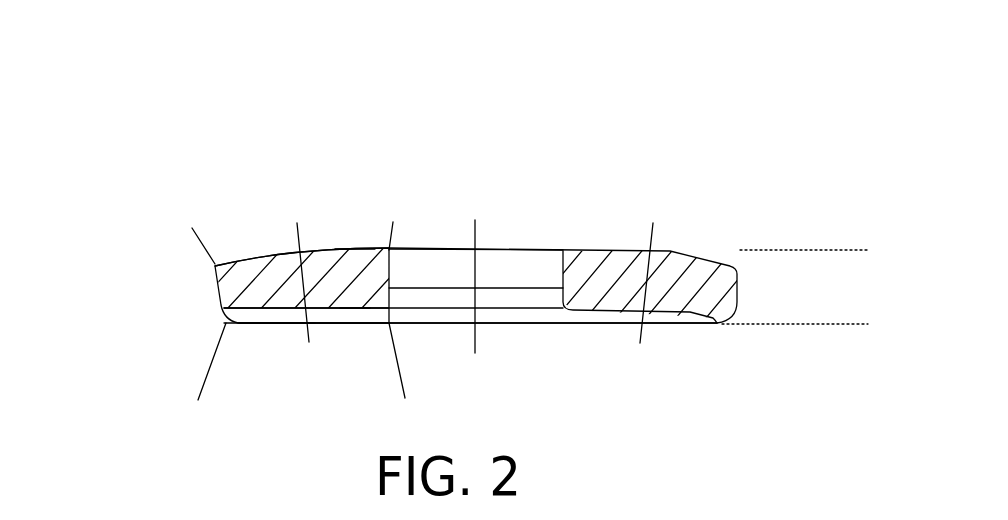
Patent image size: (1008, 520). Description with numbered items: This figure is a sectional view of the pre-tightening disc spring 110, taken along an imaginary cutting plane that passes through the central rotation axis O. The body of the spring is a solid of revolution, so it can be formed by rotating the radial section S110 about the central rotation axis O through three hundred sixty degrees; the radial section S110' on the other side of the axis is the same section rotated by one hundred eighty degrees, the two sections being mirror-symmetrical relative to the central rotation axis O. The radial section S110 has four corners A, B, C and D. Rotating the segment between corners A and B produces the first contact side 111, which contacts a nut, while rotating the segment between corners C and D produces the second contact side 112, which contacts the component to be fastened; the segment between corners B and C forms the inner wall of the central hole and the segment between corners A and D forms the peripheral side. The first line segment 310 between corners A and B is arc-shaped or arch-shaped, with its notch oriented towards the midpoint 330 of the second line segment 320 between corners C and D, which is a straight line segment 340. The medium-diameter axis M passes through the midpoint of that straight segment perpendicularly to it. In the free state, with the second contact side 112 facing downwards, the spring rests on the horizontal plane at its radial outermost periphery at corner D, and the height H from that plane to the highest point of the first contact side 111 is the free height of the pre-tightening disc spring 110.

The pre-tightening disc spring 110 is at (553, 95).
The first contact side 111 is at (517, 248).
The second contact side 112 is at (527, 310).
The radial section S110 is at (323, 243).
The radial section S110' is at (643, 253).
The first line segment 310 is at (354, 250).
The second line segment 320 is at (352, 316).
The midpoint 330 is at (298, 323).
The straight line segment 340 is at (268, 320).
The medium-diameter axis M is at (487, 275).
The central rotation axis O is at (486, 283).
The free height H is at (795, 287).
The corner A is at (187, 212).
The corner B is at (407, 196).
The corner C is at (414, 371).
The corner D is at (193, 371).